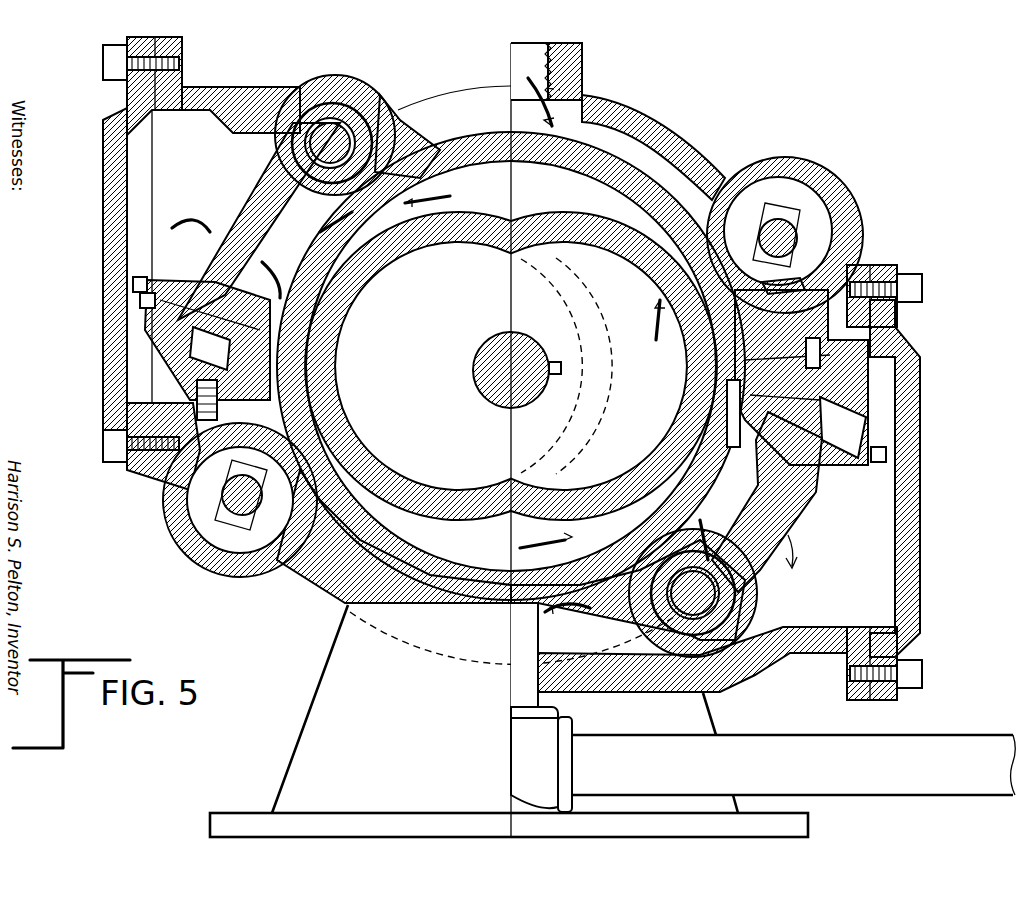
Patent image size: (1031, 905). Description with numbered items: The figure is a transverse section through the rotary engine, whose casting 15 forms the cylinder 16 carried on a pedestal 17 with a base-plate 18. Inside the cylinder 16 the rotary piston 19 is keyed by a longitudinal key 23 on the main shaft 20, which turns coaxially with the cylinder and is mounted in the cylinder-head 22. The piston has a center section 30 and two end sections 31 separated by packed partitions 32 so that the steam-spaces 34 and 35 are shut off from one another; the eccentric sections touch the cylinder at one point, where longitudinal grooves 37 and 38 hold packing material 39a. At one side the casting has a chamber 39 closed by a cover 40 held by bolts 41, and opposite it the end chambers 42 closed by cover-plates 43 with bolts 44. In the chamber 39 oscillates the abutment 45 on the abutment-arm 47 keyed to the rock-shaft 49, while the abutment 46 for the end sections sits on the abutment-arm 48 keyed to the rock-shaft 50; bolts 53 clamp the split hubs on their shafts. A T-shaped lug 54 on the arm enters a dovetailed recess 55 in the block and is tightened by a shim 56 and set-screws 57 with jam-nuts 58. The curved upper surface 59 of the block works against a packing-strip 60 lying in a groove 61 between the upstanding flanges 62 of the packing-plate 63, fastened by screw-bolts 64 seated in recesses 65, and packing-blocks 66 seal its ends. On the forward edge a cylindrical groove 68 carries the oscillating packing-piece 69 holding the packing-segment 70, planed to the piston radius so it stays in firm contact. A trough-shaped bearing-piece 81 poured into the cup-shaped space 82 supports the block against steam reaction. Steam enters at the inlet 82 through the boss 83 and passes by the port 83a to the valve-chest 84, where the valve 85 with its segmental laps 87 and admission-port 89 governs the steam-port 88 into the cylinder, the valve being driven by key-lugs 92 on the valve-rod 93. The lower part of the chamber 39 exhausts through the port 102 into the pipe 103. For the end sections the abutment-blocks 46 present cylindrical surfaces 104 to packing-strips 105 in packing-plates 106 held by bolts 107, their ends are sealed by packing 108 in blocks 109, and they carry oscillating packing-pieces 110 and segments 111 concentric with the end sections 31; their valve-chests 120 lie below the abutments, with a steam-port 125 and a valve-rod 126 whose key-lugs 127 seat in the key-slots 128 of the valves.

The casting 15 is at (345, 605).
The cylinder 16 is at (450, 612).
The pedestal 17 is at (330, 740).
The base-plate 18 is at (418, 815).
The rotary piston 19 is at (452, 518).
The main shaft 20 is at (540, 395).
The cylinder-head 22 is at (452, 105).
The longitudinal key 23 is at (552, 360).
The center section 30 is at (645, 285).
The end sections 31 is at (408, 268).
The partitions 32 is at (430, 605).
The steam-space 34 is at (546, 371).
The steam-space 35 is at (406, 377).
The longitudinal groove 37 is at (690, 405).
The longitudinal groove 38 is at (300, 375).
The chamber 39 is at (771, 548).
The packing material 39a is at (330, 345).
The cover 40 is at (922, 555).
The bolts or studs 41 is at (922, 287).
The chamber 42 is at (220, 178).
The cover-plates 43 is at (108, 247).
The bolts or studs 44 is at (105, 62).
The abutment 45 is at (882, 375).
The abutment 46 is at (145, 310).
The abutment-arm 47 is at (800, 505).
The abutment-arm 48 is at (258, 203).
The rock-shaft 49 is at (737, 645).
The rock-shaft 50 is at (318, 85).
The bolts 53 is at (312, 150).
The T-shaped lug 54 is at (700, 430).
The dovetailed recess 55 is at (150, 283).
The shim 56 is at (178, 262).
The set-screws 57 is at (132, 283).
The jam-nuts 58 is at (140, 298).
The upper surface 59 is at (880, 360).
The packing-strip 60 is at (690, 252).
The groove 61 is at (858, 265).
The upstanding flanges 62 is at (870, 337).
The packing-plate 63 is at (868, 347).
The screw-bolts 64 is at (880, 352).
The recesses 65 is at (822, 368).
The packing-block 66 is at (885, 364).
The cylindrical groove 68 is at (205, 392).
The oscillating packing-piece 69 is at (692, 398).
The packing-segment 70 is at (735, 455).
The trough-shaped bearing-piece 81 is at (350, 82).
The cup-shaped space 82 is at (378, 108).
The boss 83 is at (585, 66).
The port 83a is at (692, 142).
The valve-chest 84 is at (852, 215).
The valve 85 is at (855, 245).
The segmental laps 87 is at (702, 168).
The steam-port 88 is at (770, 240).
The admission-port 89 is at (796, 272).
The key-lugs 92 is at (790, 200).
The valve-rod 93 is at (830, 200).
The port 102 is at (747, 614).
The pipe 103 is at (878, 790).
The cylindrical surfaces 104 is at (160, 380).
The packing-strips 105 is at (300, 402).
The packing-plates 106 is at (175, 520).
The bolts 107 is at (200, 555).
The packing 108 is at (300, 390).
The blocks 109 is at (300, 312).
The oscillating packing-pieces 110 is at (300, 345).
The segments 111 is at (302, 330).
The valve-chests 120 is at (235, 572).
The steam-port 125 is at (305, 412).
The valve-rod 126 is at (276, 560).
The key-lugs 127 is at (232, 480).
The key-slots 128 is at (258, 503).